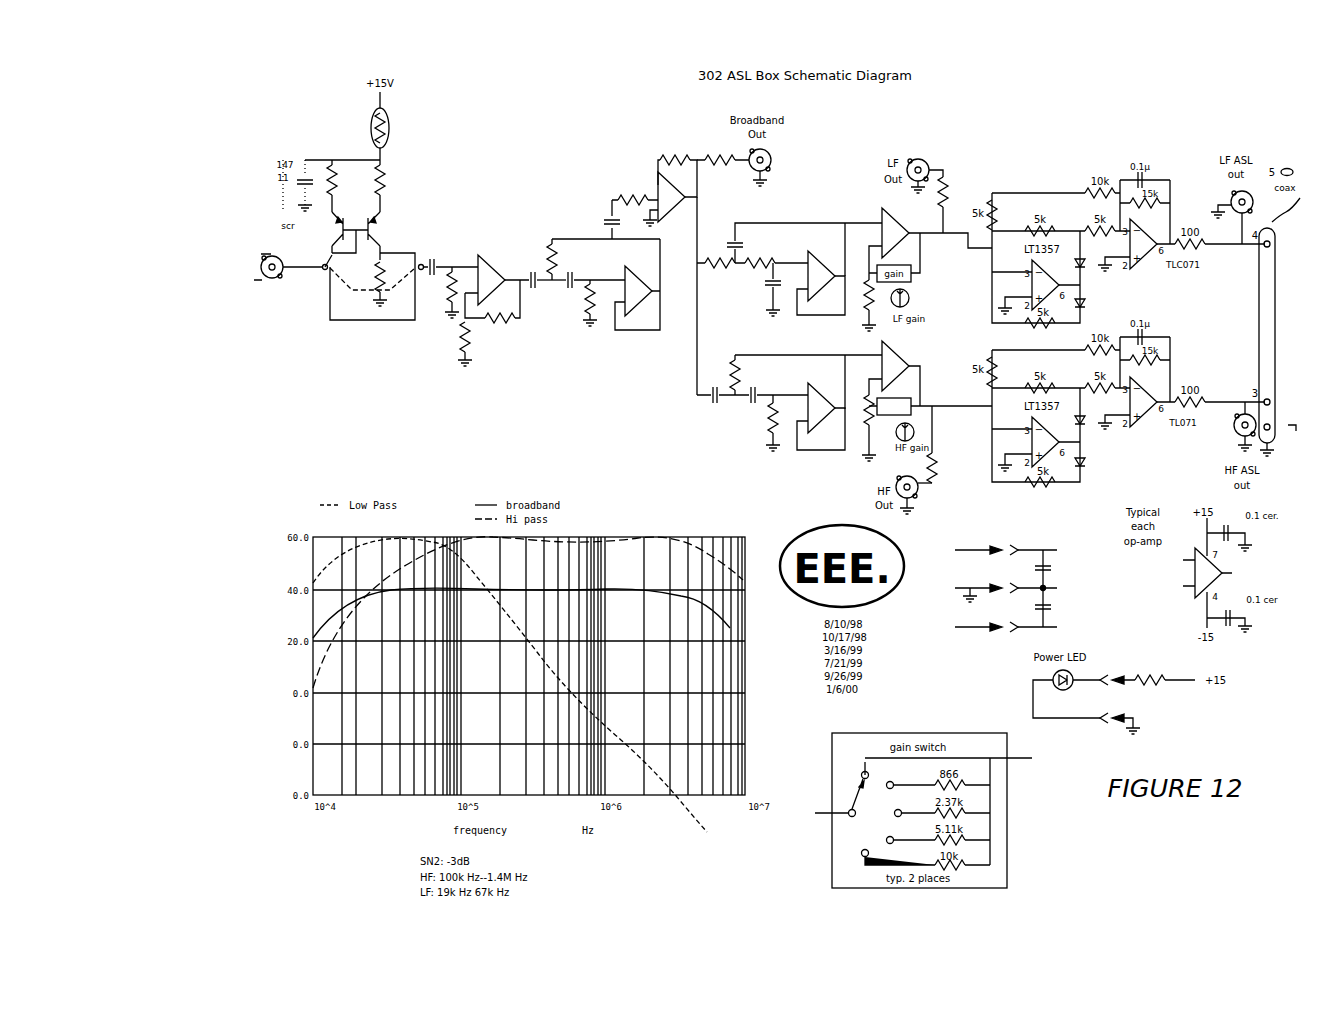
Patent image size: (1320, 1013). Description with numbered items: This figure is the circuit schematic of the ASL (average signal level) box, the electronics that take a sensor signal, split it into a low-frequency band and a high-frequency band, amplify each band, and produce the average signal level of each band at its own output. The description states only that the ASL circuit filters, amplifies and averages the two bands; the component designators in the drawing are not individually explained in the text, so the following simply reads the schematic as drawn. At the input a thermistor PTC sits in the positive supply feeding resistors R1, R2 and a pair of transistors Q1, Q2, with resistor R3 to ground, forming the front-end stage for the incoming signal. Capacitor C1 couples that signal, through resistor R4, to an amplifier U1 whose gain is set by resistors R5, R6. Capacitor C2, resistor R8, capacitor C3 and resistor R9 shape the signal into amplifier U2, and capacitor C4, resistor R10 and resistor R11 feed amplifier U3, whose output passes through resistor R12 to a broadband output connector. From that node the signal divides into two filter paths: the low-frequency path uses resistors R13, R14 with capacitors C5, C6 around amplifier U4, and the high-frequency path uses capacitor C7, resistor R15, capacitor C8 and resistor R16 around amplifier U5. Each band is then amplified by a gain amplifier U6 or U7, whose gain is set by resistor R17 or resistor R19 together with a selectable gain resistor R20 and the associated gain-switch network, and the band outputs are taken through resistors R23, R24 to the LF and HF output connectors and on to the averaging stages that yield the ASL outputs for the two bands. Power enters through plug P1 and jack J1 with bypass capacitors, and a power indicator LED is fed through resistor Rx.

The positive temperature coefficient thermistor PTC is at (399, 128).
The resistor 50 ohm R1 is at (340, 186).
The resistor 50 ohm R2 is at (387, 186).
The resistor 1k R3 is at (380, 284).
The resistor 3160 R4 is at (457, 292).
The resistor 10k R5 is at (500, 319).
The resistor 1.1k R6 is at (462, 344).
The resistor 3.92k R8 is at (603, 259).
The resistor 16.2k R9 is at (595, 303).
The resistor 787 R10 is at (635, 198).
The resistor 7.87k R11 is at (674, 154).
The resistor 100 R12 is at (723, 159).
The resistor 16.2k R13 is at (721, 262).
The resistor 16.2k R14 is at (776, 257).
The resistor 4.99k R15 is at (806, 382).
The resistor 10k R16 is at (769, 423).
The resistor 1.1k R17 is at (865, 305).
The resistor 1.1k R19 is at (865, 428).
The gain resistor R20 is at (893, 397).
The resistor 100 R23 is at (955, 205).
The resistor 100 R24 is at (939, 466).
The LED resistor 825 Rx is at (1150, 666).
The capacitor 10n C1 is at (450, 261).
The capacitor 1n C2 is at (546, 279).
The capacitor 1n C3 is at (596, 272).
The capacitor 10n C4 is at (612, 219).
The capacitor 200p C5 is at (804, 249).
The capacitor 100p C6 is at (760, 289).
The capacitor 220p C7 is at (716, 394).
The capacitor 220p C8 is at (771, 390).
The transistor Q1 is at (329, 232).
The transistor Q2 is at (380, 236).
The op-amp OP37 U1 is at (492, 277).
The op-amp LT1357 U2 is at (638, 286).
The op-amp LT1357 U3 is at (674, 192).
The op-amp LT1357 U4 is at (821, 282).
The op-amp LT1357 U5 is at (821, 414).
The op-amp LT1357 U6 is at (906, 234).
The op-amp LT1357 U7 is at (906, 366).
The power plug P1 is at (963, 580).
The power jack J1 is at (1051, 579).